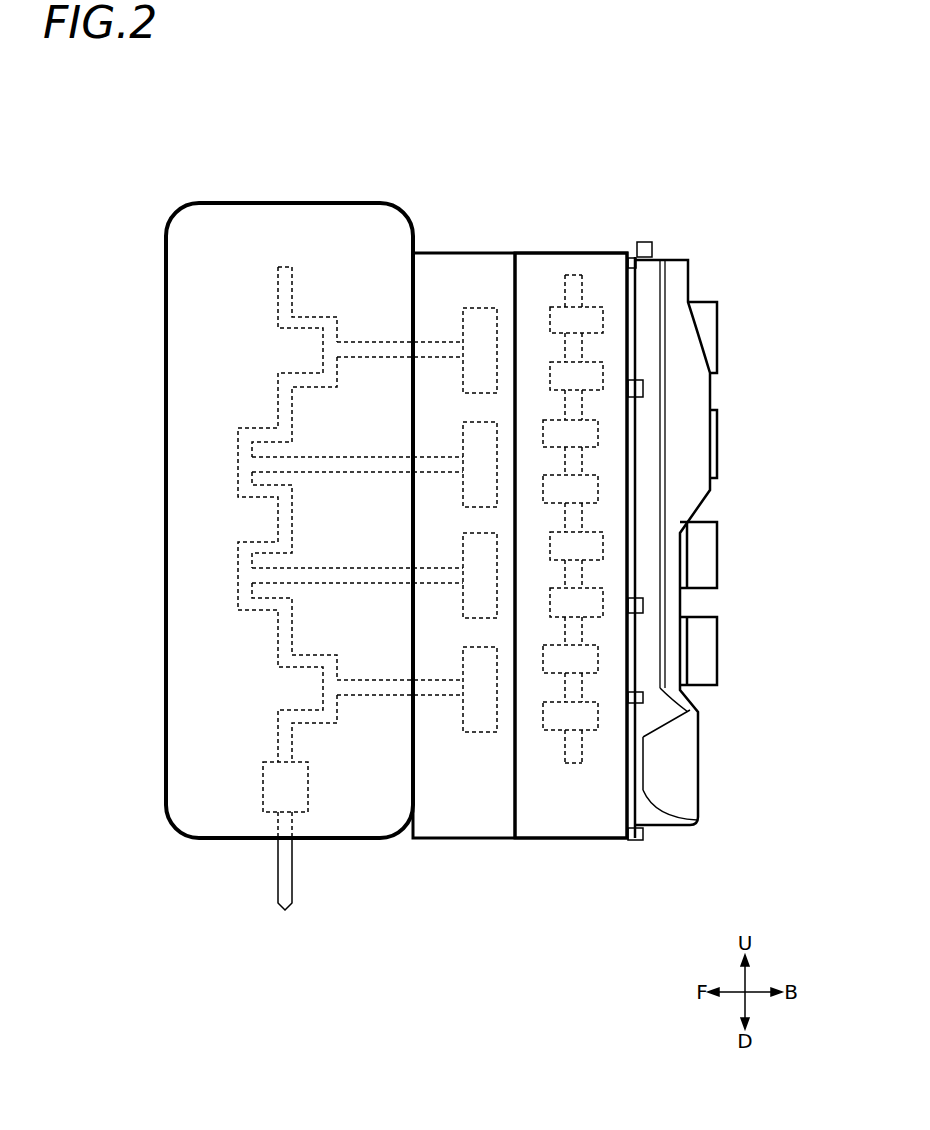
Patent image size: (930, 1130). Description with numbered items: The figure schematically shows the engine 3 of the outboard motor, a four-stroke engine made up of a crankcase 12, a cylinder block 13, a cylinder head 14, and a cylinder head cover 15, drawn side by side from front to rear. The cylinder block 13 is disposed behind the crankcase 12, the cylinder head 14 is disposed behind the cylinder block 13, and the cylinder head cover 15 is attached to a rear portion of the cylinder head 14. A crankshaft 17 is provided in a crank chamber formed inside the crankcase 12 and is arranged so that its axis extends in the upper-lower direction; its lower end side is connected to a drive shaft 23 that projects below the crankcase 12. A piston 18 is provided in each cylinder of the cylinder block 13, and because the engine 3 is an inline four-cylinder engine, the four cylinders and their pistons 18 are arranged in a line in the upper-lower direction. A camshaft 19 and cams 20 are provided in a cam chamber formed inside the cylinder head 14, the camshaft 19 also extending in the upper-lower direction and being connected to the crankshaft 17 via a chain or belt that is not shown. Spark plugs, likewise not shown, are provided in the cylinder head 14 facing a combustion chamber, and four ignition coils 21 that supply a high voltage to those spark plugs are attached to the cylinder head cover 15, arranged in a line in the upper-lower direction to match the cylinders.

The engine 3 is at (348, 152).
The crankcase 12 is at (279, 230).
The cylinder block 13 is at (486, 270).
The cylinder head 14 is at (550, 266).
The cylinder head cover 15 is at (690, 396).
The crankshaft 17 is at (238, 433).
The piston 18 is at (475, 307).
The camshaft 19 is at (583, 290).
The cam 20 is at (603, 322).
The ignition coil 21 is at (718, 336).
The drive shaft 23 is at (280, 882).